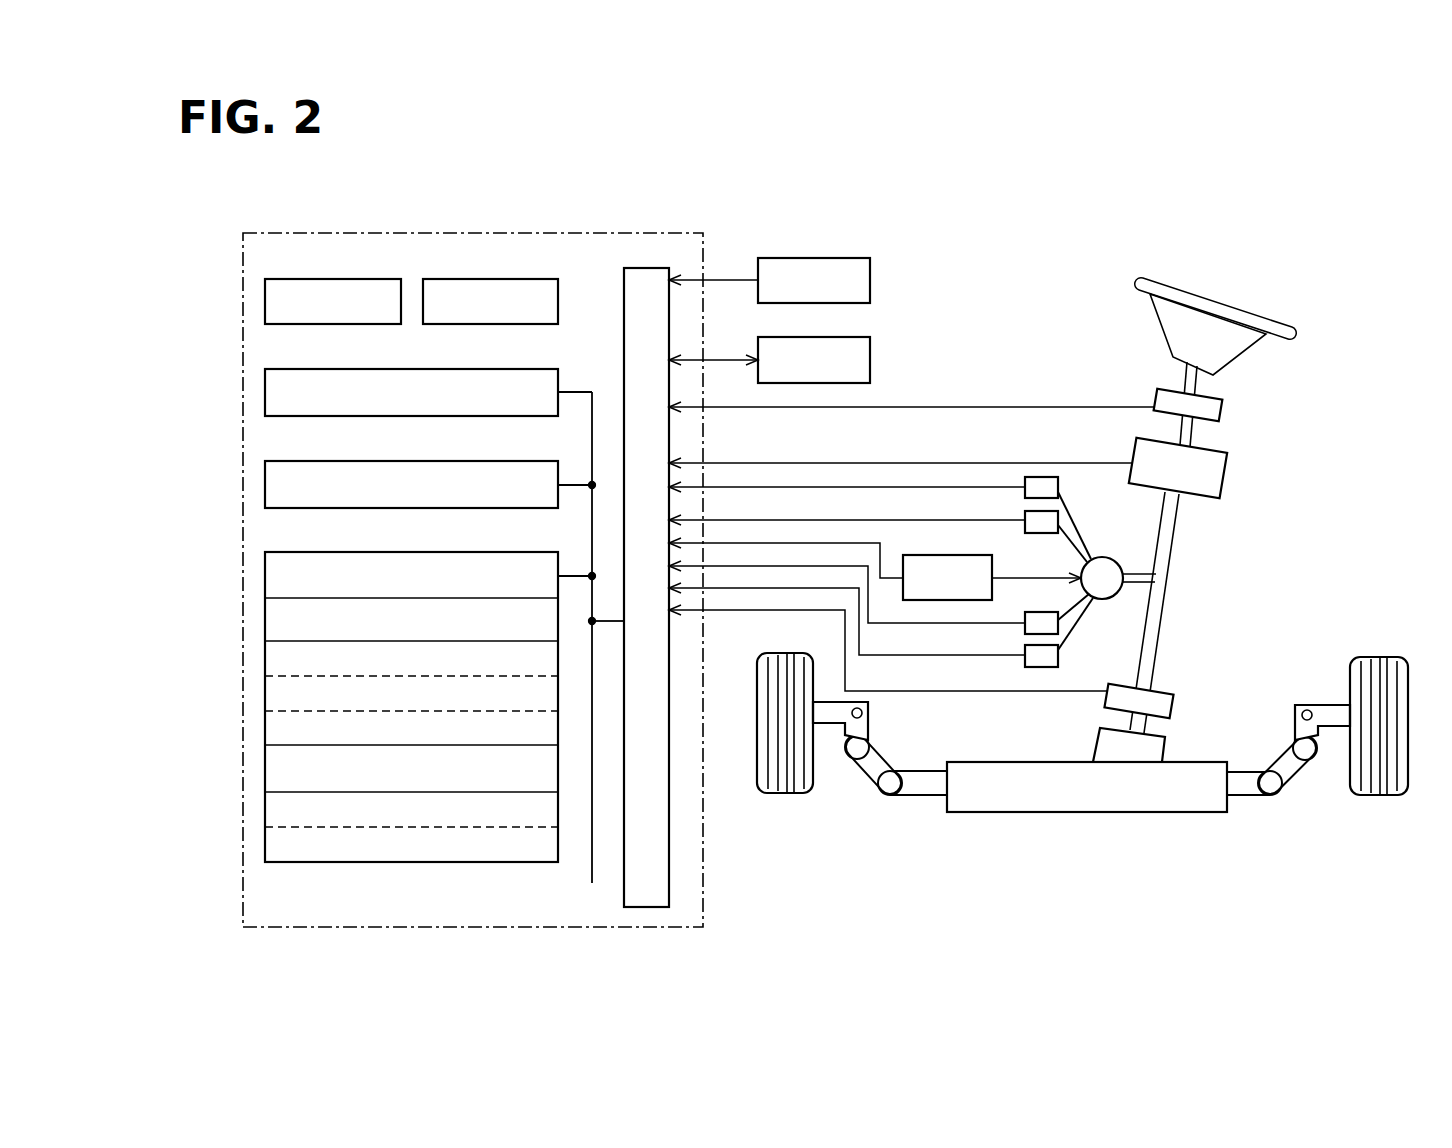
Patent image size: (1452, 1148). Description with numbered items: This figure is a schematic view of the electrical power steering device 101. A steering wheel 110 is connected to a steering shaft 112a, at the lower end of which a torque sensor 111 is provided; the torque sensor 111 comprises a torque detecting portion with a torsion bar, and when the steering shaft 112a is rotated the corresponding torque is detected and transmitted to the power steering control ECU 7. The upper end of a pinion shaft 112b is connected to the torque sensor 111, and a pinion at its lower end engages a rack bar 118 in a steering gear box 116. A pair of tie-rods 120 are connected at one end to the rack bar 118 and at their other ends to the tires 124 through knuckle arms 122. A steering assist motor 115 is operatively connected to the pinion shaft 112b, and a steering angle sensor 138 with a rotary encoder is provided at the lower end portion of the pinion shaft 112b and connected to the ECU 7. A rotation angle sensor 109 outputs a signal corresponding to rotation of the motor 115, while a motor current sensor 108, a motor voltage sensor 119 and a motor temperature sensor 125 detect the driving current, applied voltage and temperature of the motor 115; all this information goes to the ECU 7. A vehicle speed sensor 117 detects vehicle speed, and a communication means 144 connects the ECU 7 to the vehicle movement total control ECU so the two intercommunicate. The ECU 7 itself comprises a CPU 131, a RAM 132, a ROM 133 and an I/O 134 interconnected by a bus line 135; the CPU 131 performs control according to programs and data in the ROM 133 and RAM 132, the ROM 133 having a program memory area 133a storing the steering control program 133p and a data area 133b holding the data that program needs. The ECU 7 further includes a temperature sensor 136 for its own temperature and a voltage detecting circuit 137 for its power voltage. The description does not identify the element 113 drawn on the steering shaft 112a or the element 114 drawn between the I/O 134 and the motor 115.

The power steering control ECU 7 is at (492, 233).
The temperature sensor 136 is at (345, 279).
The voltage detecting circuit 137 is at (503, 279).
The CPU 131 is at (503, 369).
The RAM 132 is at (503, 461).
The ROM 133 is at (503, 552).
The memory area for the programs 133a is at (265, 622).
The steering control program 133p is at (265, 667).
The data area 133b is at (265, 772).
The bus line 135 is at (592, 871).
The I/O 134 is at (624, 896).
The vehicle speed sensor 117 is at (848, 258).
The communication means 144 is at (848, 337).
The electrical power steering device 101 is at (1186, 254).
The steering wheel 110 is at (1245, 312).
The steering shaft 112a is at (1186, 368).
The pinion shaft 112b is at (1171, 545).
The steering angle sensor 113 is at (1223, 410).
The torque sensor 111 is at (1223, 478).
The motor temperature sensor 125 is at (1060, 483).
The motor voltage sensor 119 is at (1046, 534).
The motor drive circuit 114 is at (918, 555).
The rotation angle sensor 109 is at (1046, 612).
The motor current sensor 108 is at (1058, 662).
The steering assist motor 115 is at (1115, 558).
The steering angle sensor 138 is at (1175, 697).
The steering gear box 116 is at (1095, 813).
The rack bar 118 is at (930, 795).
The tie-rod 120 is at (860, 775).
The knuckle arm 122 is at (830, 700).
The tire 124 is at (782, 797).